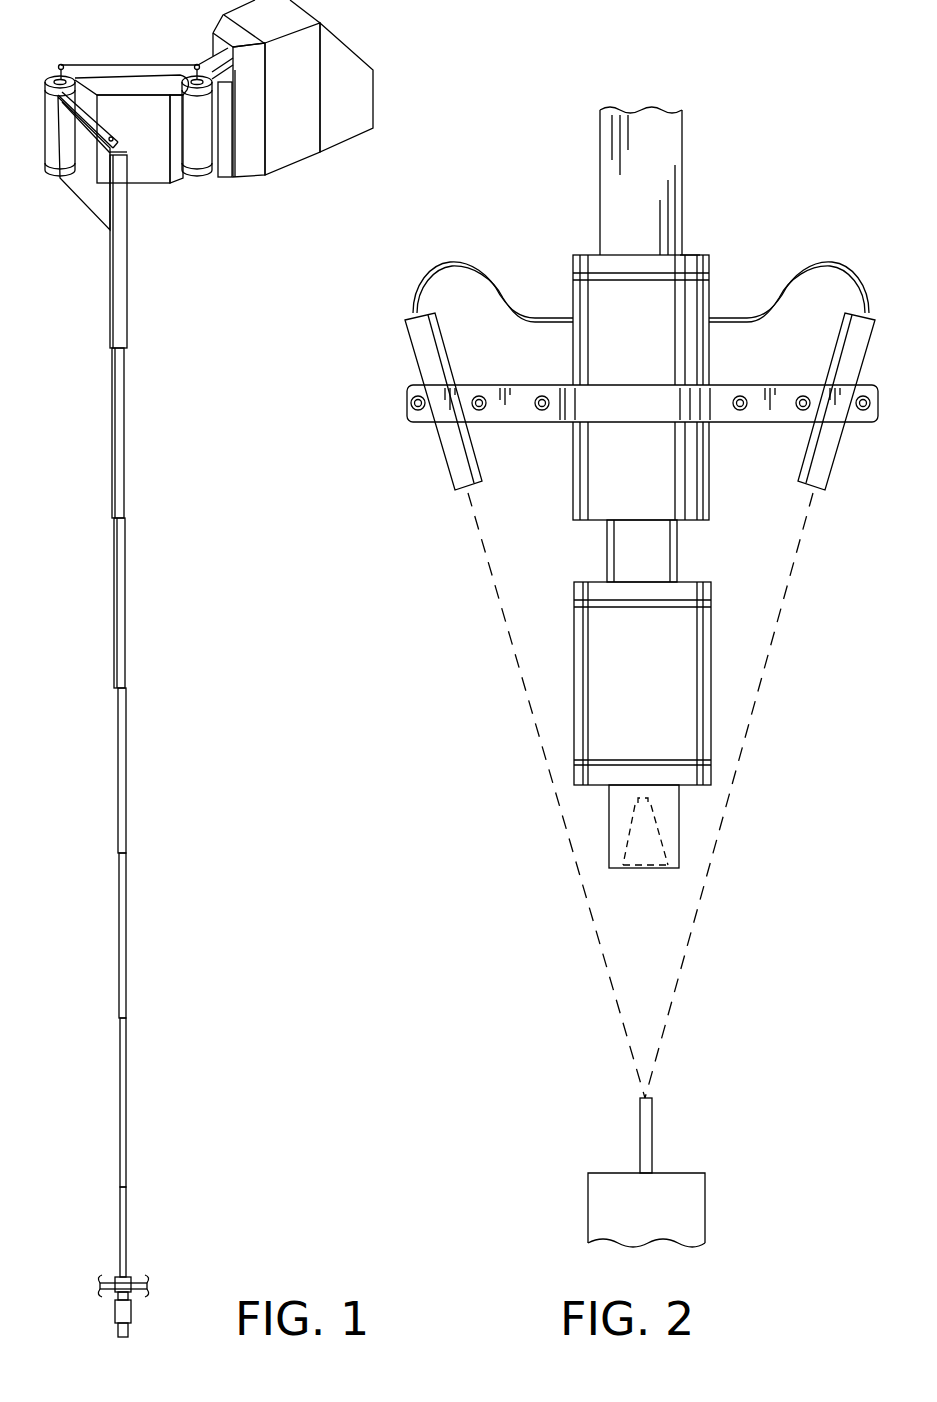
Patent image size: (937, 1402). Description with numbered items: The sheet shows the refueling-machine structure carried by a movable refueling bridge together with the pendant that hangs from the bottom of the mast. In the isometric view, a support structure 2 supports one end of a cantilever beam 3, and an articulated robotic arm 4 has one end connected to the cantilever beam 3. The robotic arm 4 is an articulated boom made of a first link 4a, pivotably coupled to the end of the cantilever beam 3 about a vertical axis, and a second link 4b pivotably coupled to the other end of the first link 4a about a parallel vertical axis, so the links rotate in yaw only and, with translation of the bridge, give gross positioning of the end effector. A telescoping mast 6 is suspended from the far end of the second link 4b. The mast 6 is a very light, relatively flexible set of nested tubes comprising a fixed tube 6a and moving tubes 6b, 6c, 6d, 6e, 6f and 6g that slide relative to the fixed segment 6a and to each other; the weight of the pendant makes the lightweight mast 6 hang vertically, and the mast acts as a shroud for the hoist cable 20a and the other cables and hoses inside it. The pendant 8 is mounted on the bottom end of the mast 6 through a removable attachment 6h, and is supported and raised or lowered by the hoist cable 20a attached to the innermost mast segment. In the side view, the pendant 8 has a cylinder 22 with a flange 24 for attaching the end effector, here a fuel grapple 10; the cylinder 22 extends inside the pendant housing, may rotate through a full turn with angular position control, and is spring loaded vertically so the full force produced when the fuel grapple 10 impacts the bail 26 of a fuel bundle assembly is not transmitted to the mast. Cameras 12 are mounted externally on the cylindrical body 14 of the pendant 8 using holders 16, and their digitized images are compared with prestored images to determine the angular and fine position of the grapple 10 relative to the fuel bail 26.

In FIG. 1, the support structure 2 is at (284, 95).
In FIG. 1, the cantilever beam 3 is at (224, 174).
In FIG. 1, the articulated robotic arm 4 is at (120, 70).
In FIG. 1, the first link 4a is at (133, 134).
In FIG. 1, the second link 4b is at (78, 178).
In FIG. 1, the telescoping mast 6 is at (132, 615).
In FIG. 1, the fixed tube 6a is at (109, 291).
In FIG. 1, the moving tube 6b is at (112, 432).
In FIG. 1, the moving tube 6c is at (114, 656).
In FIG. 1, the moving tube 6d is at (118, 771).
In FIG. 1, the moving tube 6e is at (119, 932).
In FIG. 1, the moving tube 6f is at (120, 1067).
In FIG. 1, the moving tube 6g is at (120, 1227).
In FIG. 2, the moving tube 6g is at (682, 152).
In FIG. 2, the removable attachment 6h is at (696, 253).
In FIG. 1, the pendant 8 is at (142, 1309).
In FIG. 2, the pendant 8 is at (731, 282).
In FIG. 2, the fuel grapple 10 is at (680, 810).
In FIG. 2, the cameras 12 is at (414, 342).
In FIG. 2, the cylindrical body 14 is at (573, 350).
In FIG. 2, the holders 16 is at (752, 423).
In FIG. 1, the hoist cable 20a is at (103, 64).
In FIG. 2, the cylinder 22 is at (678, 553).
In FIG. 2, the flange 24 is at (593, 590).
In FIG. 2, the bail 26 is at (652, 1137).